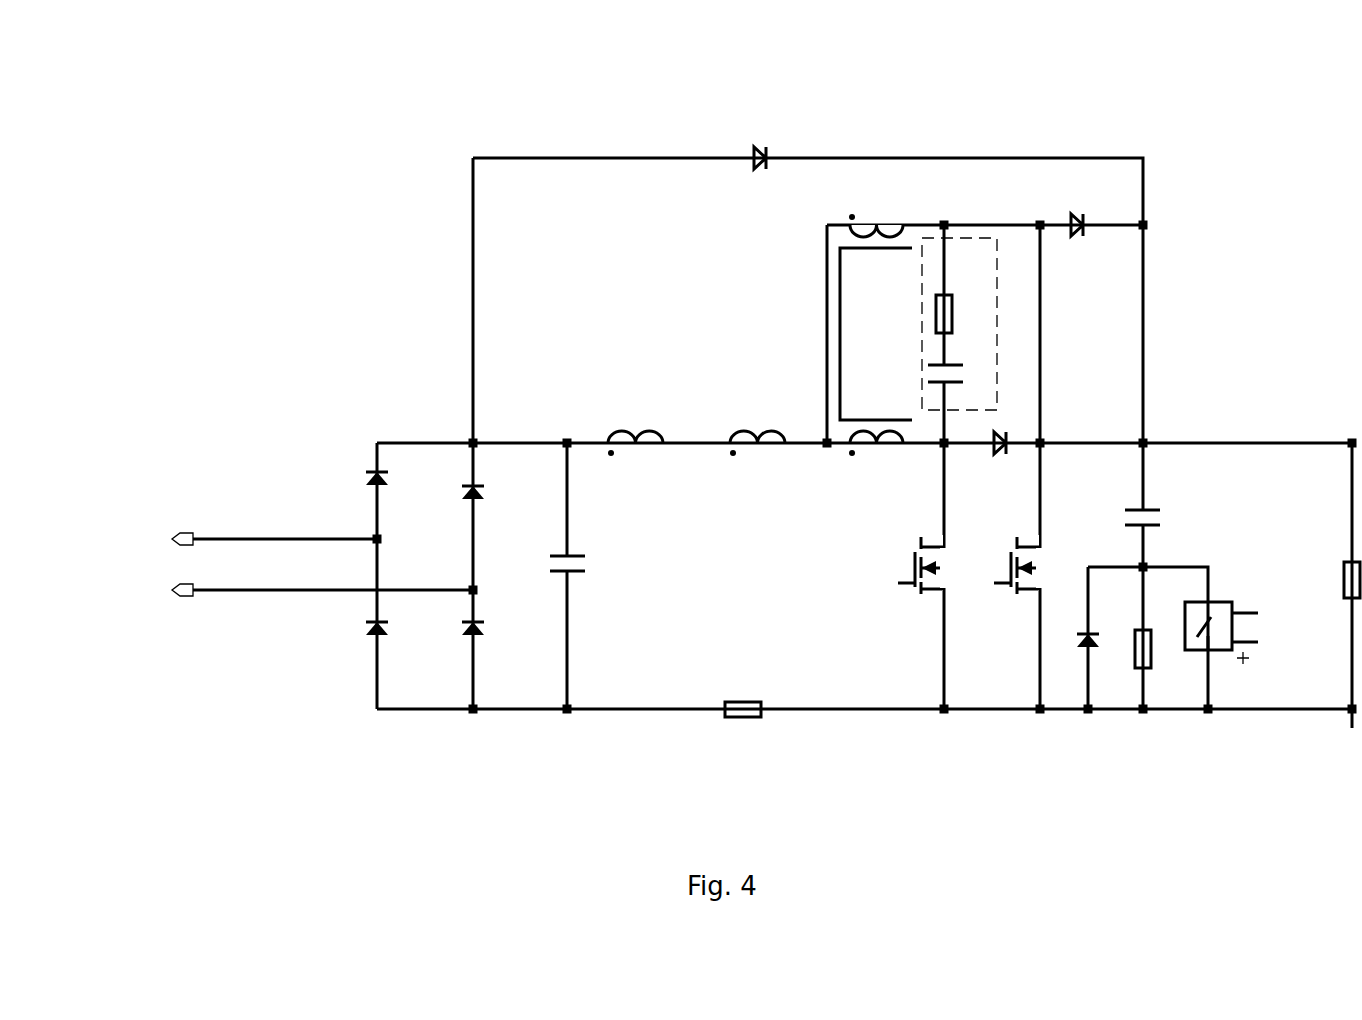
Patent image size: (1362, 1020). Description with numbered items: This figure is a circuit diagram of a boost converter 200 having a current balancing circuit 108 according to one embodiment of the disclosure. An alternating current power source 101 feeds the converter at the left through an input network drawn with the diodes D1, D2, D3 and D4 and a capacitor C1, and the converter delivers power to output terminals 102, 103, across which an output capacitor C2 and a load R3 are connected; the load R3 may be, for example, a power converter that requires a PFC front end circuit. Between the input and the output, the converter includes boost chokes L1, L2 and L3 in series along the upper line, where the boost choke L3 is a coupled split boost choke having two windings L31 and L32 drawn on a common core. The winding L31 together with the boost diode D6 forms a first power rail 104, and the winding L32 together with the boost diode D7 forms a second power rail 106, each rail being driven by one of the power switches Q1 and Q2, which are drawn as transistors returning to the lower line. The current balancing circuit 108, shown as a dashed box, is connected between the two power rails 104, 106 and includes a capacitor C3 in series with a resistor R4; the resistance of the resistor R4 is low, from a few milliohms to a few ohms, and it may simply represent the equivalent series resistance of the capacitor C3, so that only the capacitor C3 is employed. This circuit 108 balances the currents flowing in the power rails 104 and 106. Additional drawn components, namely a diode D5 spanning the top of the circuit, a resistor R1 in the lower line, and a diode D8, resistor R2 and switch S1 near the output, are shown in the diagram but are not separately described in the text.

The boost converter 200 is at (345, 113).
The alternating current power source 101 is at (160, 566).
The output terminal 102 is at (1353, 440).
The output terminal 103 is at (1352, 720).
The first power rail 104 is at (985, 448).
The second power rail 106 is at (962, 225).
The current balancing circuit 108 is at (997, 317).
The diode D1 is at (362, 499).
The rectifier diode D2 is at (452, 506).
The rectifier diode D3 is at (362, 653).
The rectifier diode D4 is at (452, 653).
The diode D5 is at (768, 178).
The boost diode D6 is at (1015, 431).
The boost diode D7 is at (1086, 201).
The diode D8 is at (1071, 666).
The capacitor C1 is at (591, 574).
The output capacitor C2 is at (1169, 523).
The capacitor C3 is at (956, 359).
The boost choke L1 is at (635, 461).
The boost choke L2 is at (757, 461).
The coupled split boost choke L3 is at (827, 297).
The winding L31 is at (881, 461).
The winding L32 is at (876, 212).
The resistor R1 is at (747, 692).
The resistor R2 is at (1164, 664).
The load R3 is at (1329, 578).
The resistor R4 is at (960, 293).
The power switch Q1 is at (917, 584).
The power switch Q2 is at (1010, 584).
The switch S1 is at (1240, 640).